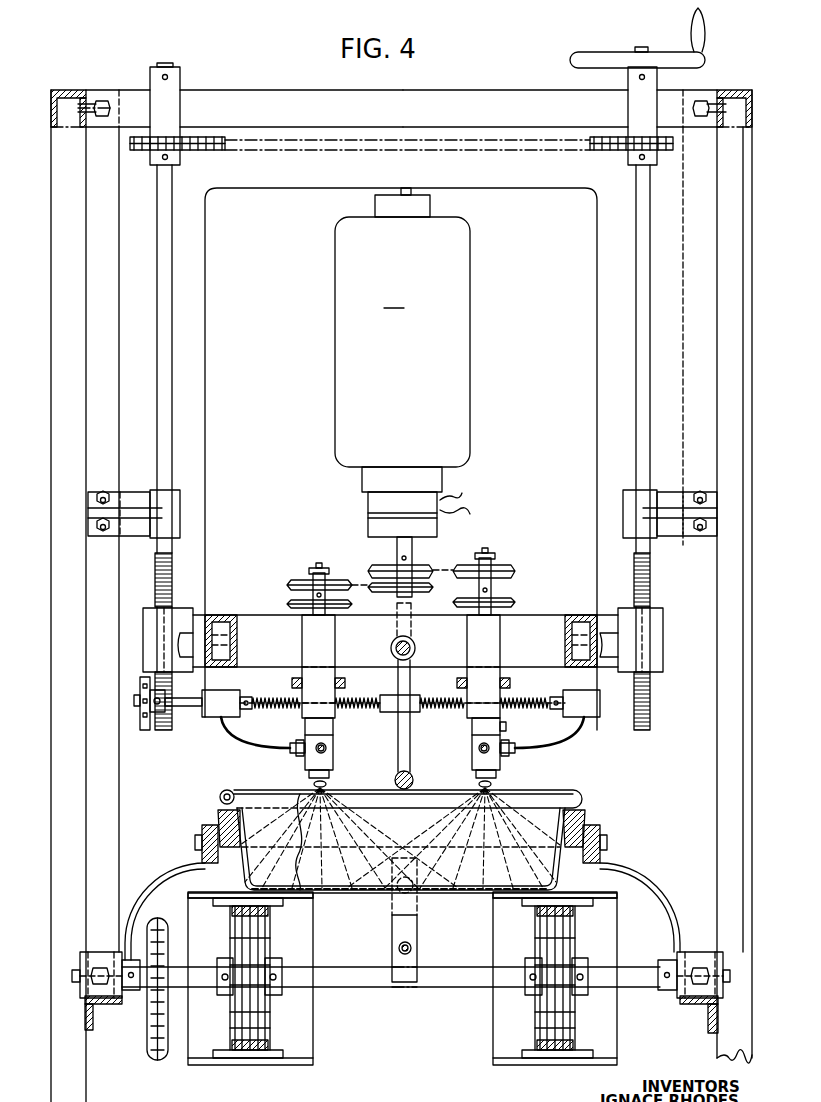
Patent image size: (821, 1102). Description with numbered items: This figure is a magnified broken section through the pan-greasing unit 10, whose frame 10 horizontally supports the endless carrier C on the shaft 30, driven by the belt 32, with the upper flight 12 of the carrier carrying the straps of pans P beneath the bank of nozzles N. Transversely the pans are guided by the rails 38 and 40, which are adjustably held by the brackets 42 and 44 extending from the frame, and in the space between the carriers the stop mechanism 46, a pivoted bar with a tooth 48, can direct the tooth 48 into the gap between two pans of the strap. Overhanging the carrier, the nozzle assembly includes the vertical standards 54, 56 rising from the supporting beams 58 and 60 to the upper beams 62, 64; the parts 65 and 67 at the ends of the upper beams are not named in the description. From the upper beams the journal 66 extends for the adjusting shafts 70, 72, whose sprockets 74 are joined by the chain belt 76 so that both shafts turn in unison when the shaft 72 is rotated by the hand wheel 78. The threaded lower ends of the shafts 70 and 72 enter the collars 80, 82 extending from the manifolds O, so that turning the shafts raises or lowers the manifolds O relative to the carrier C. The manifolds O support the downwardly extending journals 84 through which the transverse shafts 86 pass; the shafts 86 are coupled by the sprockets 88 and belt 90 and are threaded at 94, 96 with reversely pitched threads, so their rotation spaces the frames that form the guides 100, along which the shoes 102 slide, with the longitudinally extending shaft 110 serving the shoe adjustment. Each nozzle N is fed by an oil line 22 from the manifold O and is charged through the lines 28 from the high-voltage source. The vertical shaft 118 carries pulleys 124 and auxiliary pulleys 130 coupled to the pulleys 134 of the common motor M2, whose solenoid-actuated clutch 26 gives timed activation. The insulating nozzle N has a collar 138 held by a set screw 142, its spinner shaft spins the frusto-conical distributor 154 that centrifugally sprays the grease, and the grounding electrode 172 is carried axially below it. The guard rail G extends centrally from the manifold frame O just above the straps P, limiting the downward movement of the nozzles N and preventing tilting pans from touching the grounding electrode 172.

The frame 10 is at (44, 859).
The upper flight 12 is at (226, 892).
The oil lines 22 is at (246, 729).
The solenoid actuatable clutch 26 is at (356, 488).
The lines 28 is at (326, 745).
The shaft 30 is at (452, 988).
The belt 32 is at (147, 1040).
The rail 38 is at (222, 812).
The rail 40 is at (589, 830).
The bracket 42 is at (185, 858).
The bracket 44 is at (666, 870).
The stop mechanism 46 is at (392, 948).
The tooth 48 is at (417, 932).
The vertical standard 54 is at (95, 343).
The vertical standard 56 is at (705, 350).
The supporting beam 58 is at (92, 1012).
The supporting beam 60 is at (700, 1010).
The upper beam 62 is at (63, 92).
The upper beam 64 is at (740, 92).
The top cross bar left part 65 is at (137, 100).
The journal 66 is at (135, 492).
The top cross bar right part 67 is at (668, 102).
The adjusting shaft 70 is at (160, 288).
The adjusting shaft 72 is at (645, 293).
The sprockets 74 is at (176, 152).
The chain belt 76 is at (410, 150).
The hand wheel 78 is at (598, 56).
The collar 80 is at (148, 620).
The collar 82 is at (655, 620).
The journals 84 is at (215, 705).
The transverse shafts 86 is at (393, 700).
The sprockets 88 is at (140, 692).
The belt 90 is at (143, 730).
The thread 94 is at (276, 699).
The thread 96 is at (515, 700).
The guides 100 is at (505, 678).
The shoes 102 is at (310, 647).
The longitudinally extending shaft 110 is at (392, 646).
The shaft 118 is at (319, 566).
The pulleys 124 is at (290, 600).
The auxiliary pulleys 130 is at (296, 580).
The pulleys 134 is at (368, 570).
The collar 138 is at (305, 728).
The set screw 142 is at (502, 730).
The distributor 154 is at (312, 777).
The grounding electrode 172 is at (327, 783).
The carrier C is at (244, 1075).
The guard rail G is at (400, 770).
The common motor M2 is at (402, 327).
The nozzle N is at (293, 766).
The manifold O is at (220, 615).
The pan P is at (223, 781).